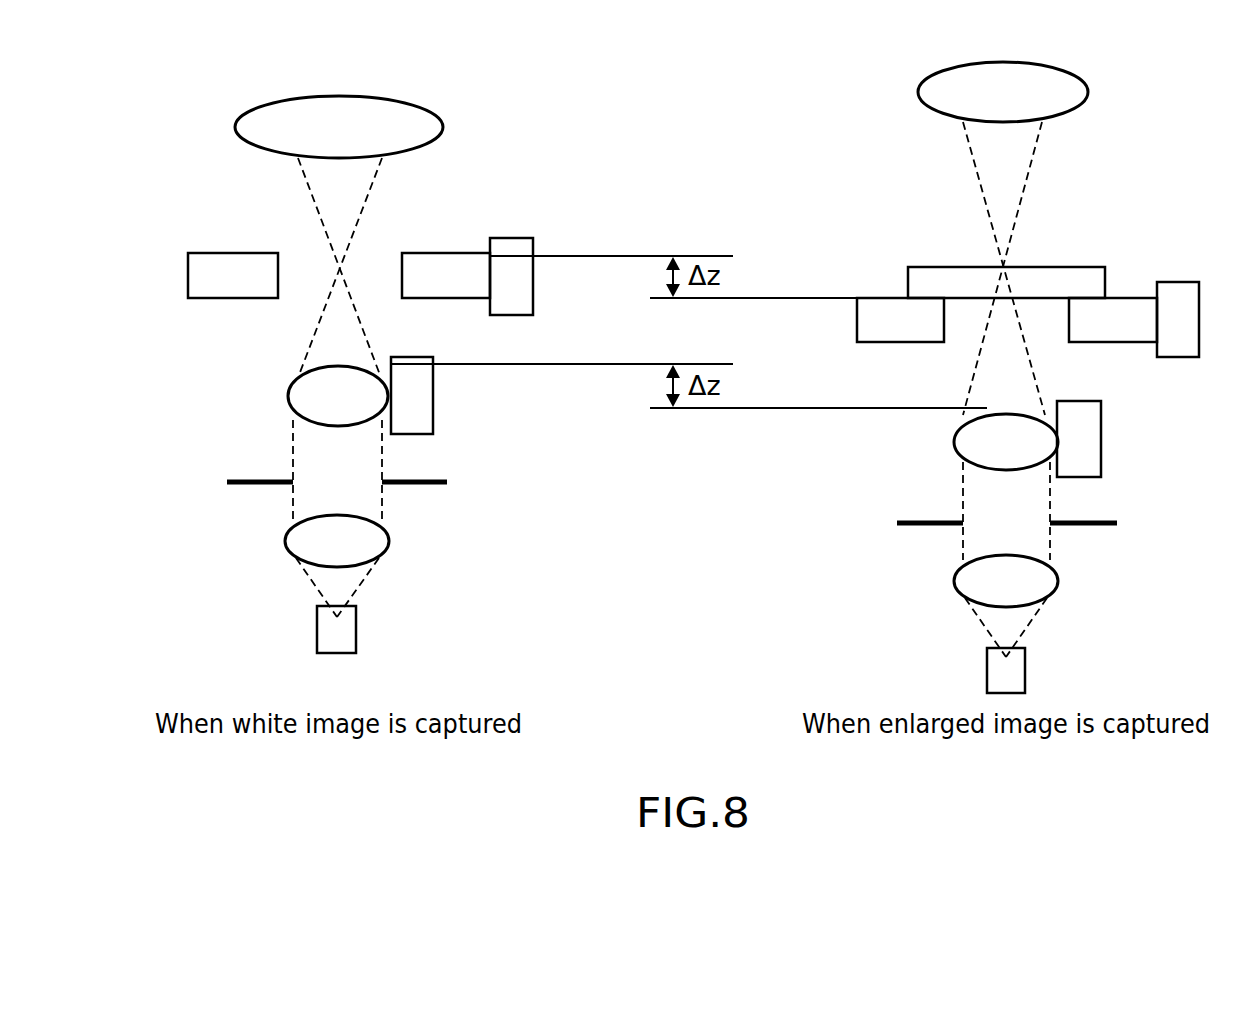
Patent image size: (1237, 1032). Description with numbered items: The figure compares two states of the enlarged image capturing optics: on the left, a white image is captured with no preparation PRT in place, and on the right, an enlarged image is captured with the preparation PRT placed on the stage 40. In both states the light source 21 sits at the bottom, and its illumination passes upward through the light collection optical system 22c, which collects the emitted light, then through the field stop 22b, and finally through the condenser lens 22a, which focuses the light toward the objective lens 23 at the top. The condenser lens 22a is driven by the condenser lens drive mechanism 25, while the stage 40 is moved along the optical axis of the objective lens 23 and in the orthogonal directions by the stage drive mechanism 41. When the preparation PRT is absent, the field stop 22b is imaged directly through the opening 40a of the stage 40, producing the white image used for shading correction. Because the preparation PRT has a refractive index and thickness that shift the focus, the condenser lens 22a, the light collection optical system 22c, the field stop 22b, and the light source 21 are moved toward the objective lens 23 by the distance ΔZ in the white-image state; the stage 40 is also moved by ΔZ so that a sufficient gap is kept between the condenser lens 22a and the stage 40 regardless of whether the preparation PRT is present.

The light source 21 is at (356, 628).
The condenser lens 22a is at (287, 405).
The field stop 22b is at (447, 482).
The light collection optical system 22c is at (388, 534).
The objective lens 23 is at (443, 124).
The condenser lens drive mechanism 25 is at (433, 418).
The stage 40 is at (446, 253).
The opening 40a is at (944, 325).
The stage drive mechanism 41 is at (512, 238).
The preparation PRT is at (1080, 267).